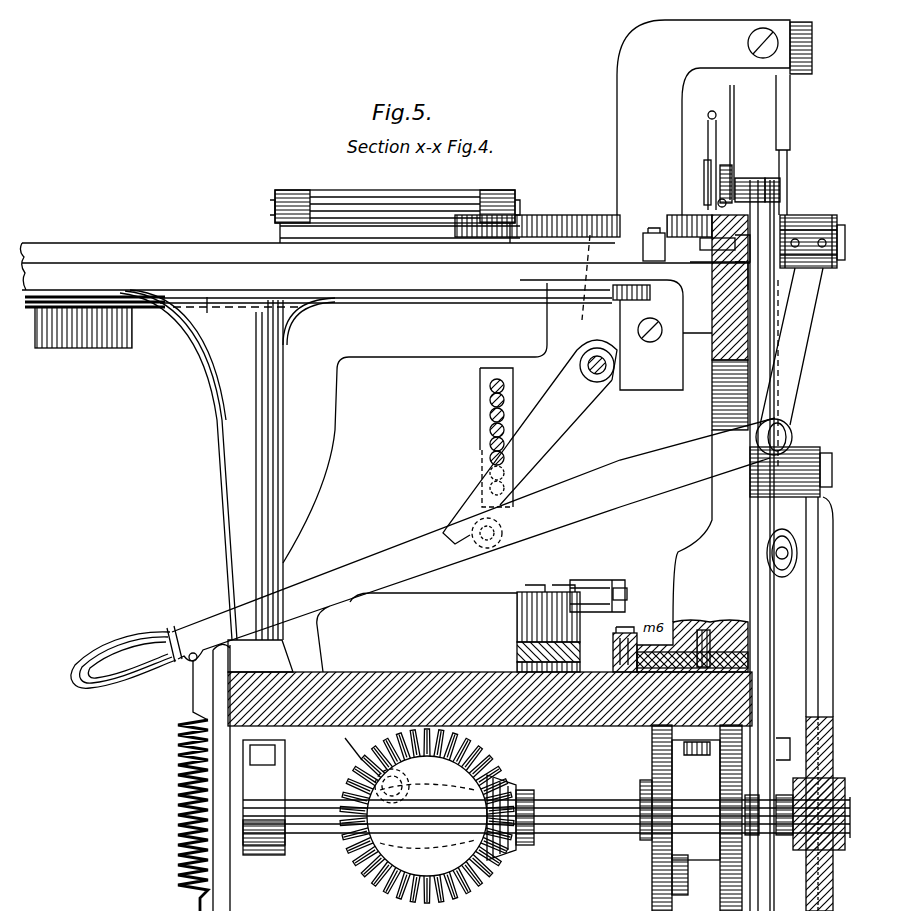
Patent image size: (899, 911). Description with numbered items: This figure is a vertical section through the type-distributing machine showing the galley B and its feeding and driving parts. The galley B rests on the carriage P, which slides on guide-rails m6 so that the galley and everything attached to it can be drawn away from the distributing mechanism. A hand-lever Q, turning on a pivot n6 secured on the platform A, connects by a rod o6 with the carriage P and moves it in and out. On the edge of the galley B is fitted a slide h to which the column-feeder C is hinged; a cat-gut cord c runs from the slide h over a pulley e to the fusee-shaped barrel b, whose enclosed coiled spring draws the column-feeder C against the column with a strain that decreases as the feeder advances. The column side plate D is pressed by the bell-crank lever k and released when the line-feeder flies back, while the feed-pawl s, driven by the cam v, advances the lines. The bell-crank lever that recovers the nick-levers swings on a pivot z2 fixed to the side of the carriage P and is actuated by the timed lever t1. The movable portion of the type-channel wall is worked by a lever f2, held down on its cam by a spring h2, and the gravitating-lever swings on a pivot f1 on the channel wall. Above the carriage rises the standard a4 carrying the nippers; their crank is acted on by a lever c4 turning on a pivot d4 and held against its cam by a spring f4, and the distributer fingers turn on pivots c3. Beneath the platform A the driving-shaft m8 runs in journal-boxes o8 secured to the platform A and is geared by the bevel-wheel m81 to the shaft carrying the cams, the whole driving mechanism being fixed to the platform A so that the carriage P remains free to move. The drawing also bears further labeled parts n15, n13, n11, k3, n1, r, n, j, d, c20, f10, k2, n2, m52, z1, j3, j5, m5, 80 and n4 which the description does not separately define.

The column side plate D is at (385, 265).
The galley B is at (231, 452).
The column-feeder C is at (395, 206).
The slide h is at (397, 216).
The cat-gut cord c is at (318, 294).
The barrel b is at (83, 327).
The pulley e is at (616, 335).
The carriage P is at (499, 452).
The standard a4 is at (703, 117).
The pivots c3 is at (812, 38).
The lever c4 is at (799, 353).
The pin n15 is at (712, 105).
The rod n13 is at (703, 165).
The slide n11 is at (698, 182).
The rod k3 is at (739, 142).
The knurled nut n1 is at (732, 180).
The feed-pawl s is at (750, 183).
The block r is at (772, 180).
The nut n is at (661, 244).
The bell-crank lever k is at (717, 245).
The plate j is at (735, 237).
The bar d is at (717, 251).
The link c20 is at (750, 280).
The pivot f1 is at (790, 215).
The cap f10 is at (851, 238).
The lever f2 is at (812, 330).
The pivot z2 is at (590, 365).
The lever k2 is at (530, 442).
The screw plate n2 is at (505, 390).
The lever t1 is at (471, 545).
The spring h2 is at (185, 786).
The guide-rails m6 is at (260, 656).
The platform A is at (490, 699).
The pivot n6 is at (548, 619).
The hand-lever Q is at (597, 585).
The rod o6 is at (628, 625).
The gear wheel m52 is at (427, 816).
The pin z1 is at (351, 749).
The driving-shaft m8 is at (546, 817).
The bevel-wheel m81 is at (528, 813).
The journal-boxes o8 is at (481, 800).
The gear j3 is at (656, 818).
The gear j5 is at (715, 818).
The bracket m5 is at (816, 814).
The cam v is at (783, 749).
The collar 80 is at (802, 748).
The pulley n4 is at (774, 505).
The pivot d4 is at (820, 447).
The spring f4 is at (822, 560).